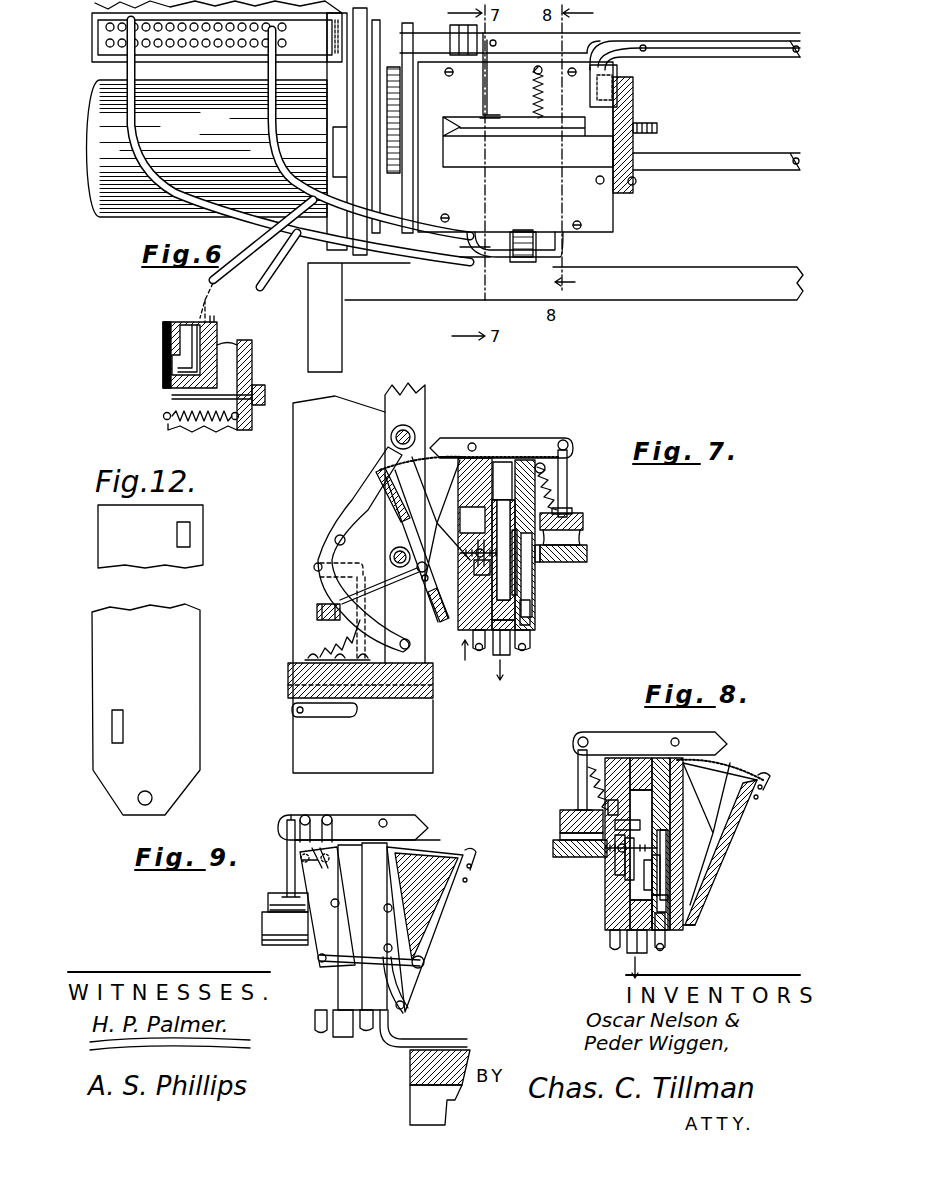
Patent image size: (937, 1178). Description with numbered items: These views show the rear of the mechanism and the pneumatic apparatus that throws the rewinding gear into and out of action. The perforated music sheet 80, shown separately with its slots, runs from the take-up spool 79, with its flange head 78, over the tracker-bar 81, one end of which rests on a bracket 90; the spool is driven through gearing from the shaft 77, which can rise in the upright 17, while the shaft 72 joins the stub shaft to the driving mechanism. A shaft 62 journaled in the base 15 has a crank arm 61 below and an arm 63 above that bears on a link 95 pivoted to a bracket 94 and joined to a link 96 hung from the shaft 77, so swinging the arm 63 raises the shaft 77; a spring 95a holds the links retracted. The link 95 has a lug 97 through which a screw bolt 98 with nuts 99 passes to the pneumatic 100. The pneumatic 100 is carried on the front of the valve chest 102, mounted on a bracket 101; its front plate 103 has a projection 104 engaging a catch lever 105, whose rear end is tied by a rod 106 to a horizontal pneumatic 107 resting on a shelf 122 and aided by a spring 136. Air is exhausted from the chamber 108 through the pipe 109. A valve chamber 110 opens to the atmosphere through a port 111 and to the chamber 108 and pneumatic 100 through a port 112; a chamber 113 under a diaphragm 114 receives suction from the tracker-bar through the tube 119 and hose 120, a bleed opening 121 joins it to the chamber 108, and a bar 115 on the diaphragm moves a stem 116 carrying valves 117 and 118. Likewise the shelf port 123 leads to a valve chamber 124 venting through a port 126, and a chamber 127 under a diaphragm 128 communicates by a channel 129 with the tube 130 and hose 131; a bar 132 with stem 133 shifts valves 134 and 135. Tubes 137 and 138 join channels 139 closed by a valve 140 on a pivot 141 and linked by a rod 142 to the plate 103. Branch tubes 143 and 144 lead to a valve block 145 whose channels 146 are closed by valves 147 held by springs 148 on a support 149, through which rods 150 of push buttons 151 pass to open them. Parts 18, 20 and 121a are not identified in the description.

In FIG. 6, the base 15 is at (640, 285).
In FIG. 7, the base 15 is at (288, 665).
In FIG. 9, the base 15 is at (415, 1080).
In FIG. 6, the upright 17 is at (405, 45).
In FIG. 6, the frame bracket 18 is at (308, 330).
In FIG. 7, the frame bracket 18 is at (293, 740).
In FIG. 9, the frame bracket 18 is at (415, 1090).
In FIG. 7, the post 20 is at (425, 395).
In FIG. 7, the crank arm 61 is at (292, 710).
In FIG. 7, the shaft 62 is at (290, 688).
In FIG. 7, the arm 63 is at (315, 565).
In FIG. 6, the shaft 72 is at (745, 150).
In FIG. 6, the shaft 77 is at (775, 58).
In FIG. 7, the shaft 77 is at (410, 432).
In FIG. 6, the flange head 78 is at (333, 142).
In FIG. 6, the take-up spool 79 is at (207, 148).
In FIG. 12, the perforated music sheet 80 is at (195, 612).
In FIG. 6, the tracker-bar 81 is at (340, 14).
In FIG. 6, the bracket 90 is at (350, 33).
In FIG. 7, the bracket 94 is at (413, 648).
In FIG. 7, the link 95 is at (320, 572).
In FIG. 7, the spring 95a is at (313, 655).
In FIG. 7, the link 96 is at (345, 505).
In FIG. 7, the apertured lug 97 is at (320, 640).
In FIG. 7, the screw bolt 98 is at (353, 598).
In FIG. 7, the nuts 99 is at (318, 610).
In FIG. 7, the pneumatic 100 is at (380, 508).
In FIG. 8, the pneumatic 100 is at (725, 830).
In FIG. 9, the pneumatic 100 is at (425, 912).
In FIG. 9, the bracket 101 is at (395, 1030).
In FIG. 6, the pneumatic valve chest 102 is at (600, 212).
In FIG. 7, the pneumatic valve chest 102 is at (545, 458).
In FIG. 8, the pneumatic valve chest 102 is at (618, 758).
In FIG. 9, the pneumatic valve chest 102 is at (350, 845).
In FIG. 7, the front plate 103 is at (395, 520).
In FIG. 9, the front plate 103 is at (445, 940).
In FIG. 7, the projection 104 is at (385, 470).
In FIG. 8, the projection 104 is at (755, 775).
In FIG. 9, the projection 104 is at (468, 850).
In FIG. 7, the catch lever 105 is at (445, 440).
In FIG. 8, the catch lever 105 is at (580, 735).
In FIG. 9, the catch lever 105 is at (420, 825).
In FIG. 6, the rod 106 is at (483, 80).
In FIG. 7, the rod 106 is at (566, 440).
In FIG. 8, the rod 106 is at (585, 740).
In FIG. 9, the rod 106 is at (285, 858).
In FIG. 6, the pneumatic 107 is at (518, 108).
In FIG. 7, the pneumatic 107 is at (580, 522).
In FIG. 8, the pneumatic 107 is at (560, 818).
In FIG. 9, the pneumatic 107 is at (272, 876).
In FIG. 7, the chamber 108 is at (520, 458).
In FIG. 8, the chamber 108 is at (660, 758).
In FIG. 6, the pipe 109 is at (520, 262).
In FIG. 7, the pipe 109 is at (515, 655).
In FIG. 8, the pipe 109 is at (628, 945).
In FIG. 9, the pipe 109 is at (340, 1037).
In FIG. 7, the valve chamber 110 is at (518, 585).
In FIG. 7, the port 111 is at (463, 567).
In FIG. 7, the port 112 is at (497, 458).
In FIG. 7, the chamber 113 is at (538, 560).
In FIG. 7, the flexible diaphragm 114 is at (557, 512).
In FIG. 7, the bar 115 is at (555, 495).
In FIG. 7, the stem 116 is at (450, 560).
In FIG. 7, the valve 117 is at (475, 580).
In FIG. 7, the valve 118 is at (485, 600).
In FIG. 6, the tube 119 is at (470, 258).
In FIG. 7, the tube 119 is at (530, 630).
In FIG. 8, the tube 119 is at (610, 940).
In FIG. 9, the tube 119 is at (320, 1033).
In FIG. 6, the tube or hose 120 is at (340, 255).
In FIG. 7, the bleed opening 121 is at (528, 605).
In FIG. 8, the valve 121a is at (665, 875).
In FIG. 6, the shelf 122 is at (605, 198).
In FIG. 7, the shelf 122 is at (585, 545).
In FIG. 8, the shelf 122 is at (556, 845).
In FIG. 9, the shelf 122 is at (268, 930).
In FIG. 8, the port 123 is at (585, 855).
In FIG. 8, the valve chamber 124 is at (600, 865).
In FIG. 8, the port 126 is at (700, 800).
In FIG. 8, the chamber 127 is at (740, 800).
In FIG. 8, the diaphragm 128 is at (670, 845).
In FIG. 8, the channel 129 is at (660, 895).
In FIG. 6, the tube 130 is at (580, 245).
In FIG. 7, the tube 130 is at (522, 652).
In FIG. 8, the tube 130 is at (665, 930).
In FIG. 9, the tube 130 is at (363, 1032).
In FIG. 6, the flexible tube or hose 131 is at (388, 262).
In FIG. 8, the bar 132 is at (720, 758).
In FIG. 8, the stem 133 is at (605, 890).
In FIG. 8, the valve 134 is at (620, 840).
In FIG. 8, the valve 135 is at (613, 810).
In FIG. 6, the spring 136 is at (533, 93).
In FIG. 7, the spring 136 is at (560, 467).
In FIG. 8, the spring 136 is at (595, 780).
In FIG. 6, the tube 137 is at (645, 55).
In FIG. 9, the tube 137 is at (298, 818).
In FIG. 6, the tube 138 is at (620, 65).
In FIG. 9, the tube 138 is at (320, 815).
In FIG. 6, the channels 139 is at (605, 95).
In FIG. 9, the channels 139 is at (320, 850).
In FIG. 6, the valve 140 is at (655, 90).
In FIG. 9, the valve 140 is at (310, 900).
In FIG. 6, the pivot 141 is at (680, 145).
In FIG. 6, the rod 142 is at (630, 180).
In FIG. 9, the rod 142 is at (425, 967).
In FIG. 6, the branch tube 143 is at (278, 288).
In FIG. 6, the branch tube 144 is at (275, 262).
In FIG. 6, the valve block 145 is at (163, 325).
In FIG. 6, the channels 146 is at (180, 340).
In FIG. 6, the valves 147 is at (163, 360).
In FIG. 6, the springs 148 is at (165, 416).
In FIG. 6, the support 149 is at (250, 365).
In FIG. 6, the rods 150 is at (172, 396).
In FIG. 6, the push buttons 151 is at (288, 377).